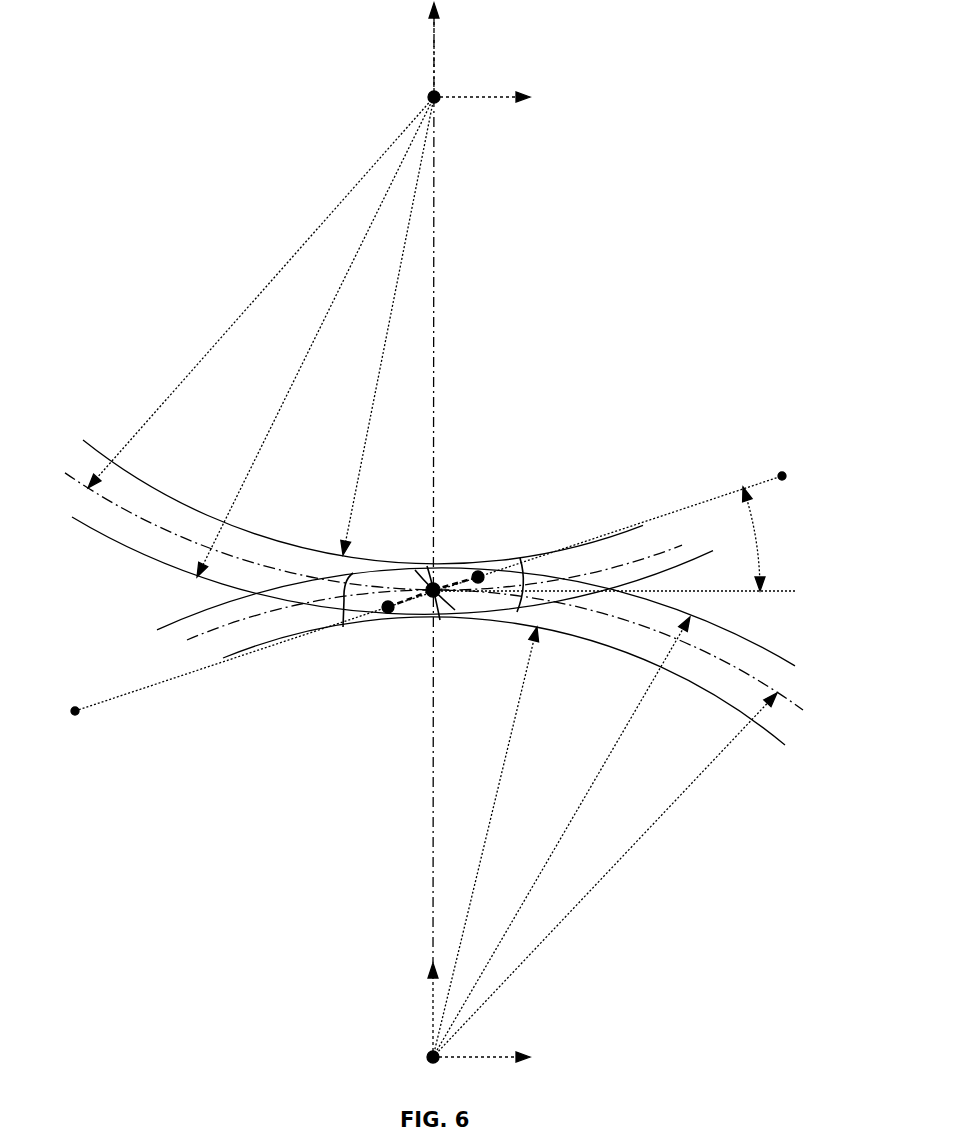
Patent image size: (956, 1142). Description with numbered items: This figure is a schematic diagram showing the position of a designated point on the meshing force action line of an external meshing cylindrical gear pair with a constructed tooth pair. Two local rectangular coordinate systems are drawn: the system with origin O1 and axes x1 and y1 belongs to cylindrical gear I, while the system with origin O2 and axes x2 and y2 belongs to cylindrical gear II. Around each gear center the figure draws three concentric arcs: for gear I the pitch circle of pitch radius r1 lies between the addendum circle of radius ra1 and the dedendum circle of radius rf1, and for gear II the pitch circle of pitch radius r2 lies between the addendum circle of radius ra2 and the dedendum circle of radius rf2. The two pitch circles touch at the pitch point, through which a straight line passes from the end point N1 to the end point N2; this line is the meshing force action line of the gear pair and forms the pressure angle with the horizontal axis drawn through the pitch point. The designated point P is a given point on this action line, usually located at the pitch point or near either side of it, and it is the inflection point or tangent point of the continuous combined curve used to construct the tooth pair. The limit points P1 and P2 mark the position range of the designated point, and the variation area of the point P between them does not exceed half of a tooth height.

The origin of local rectangular coordinate system of cylindrical gear I O1 is at (411, 1067).
The origin of local rectangular coordinate system of cylindrical gear II O2 is at (412, 91).
The x axis of local coordinate system of cylindrical gear I x1 is at (481, 1038).
The y axis of local coordinate system of cylindrical gear I y1 is at (412, 1005).
The x axis of local coordinate system of cylindrical gear II x2 is at (482, 78).
The y axis of local coordinate system of cylindrical gear II y2 is at (415, 48).
The designated point P is at (436, 586).
The limit point of position range of designated point P1 is at (388, 613).
The limit point of position range of designated point P2 is at (482, 575).
The end point of meshing force action line N1 is at (245, 682).
The end point of meshing force action line N2 is at (623, 516).
The pitch radius of cylindrical gear I r1 is at (495, 823).
The addendum circle radius of cylindrical gear I ra1 is at (476, 812).
The dedendum circle radius of cylindrical gear I rf1 is at (504, 837).
The pitch radius of cylindrical gear II r2 is at (373, 343).
The addendum circle radius of cylindrical gear II ra2 is at (392, 355).
The dedendum circle radius of cylindrical gear II rf2 is at (363, 330).